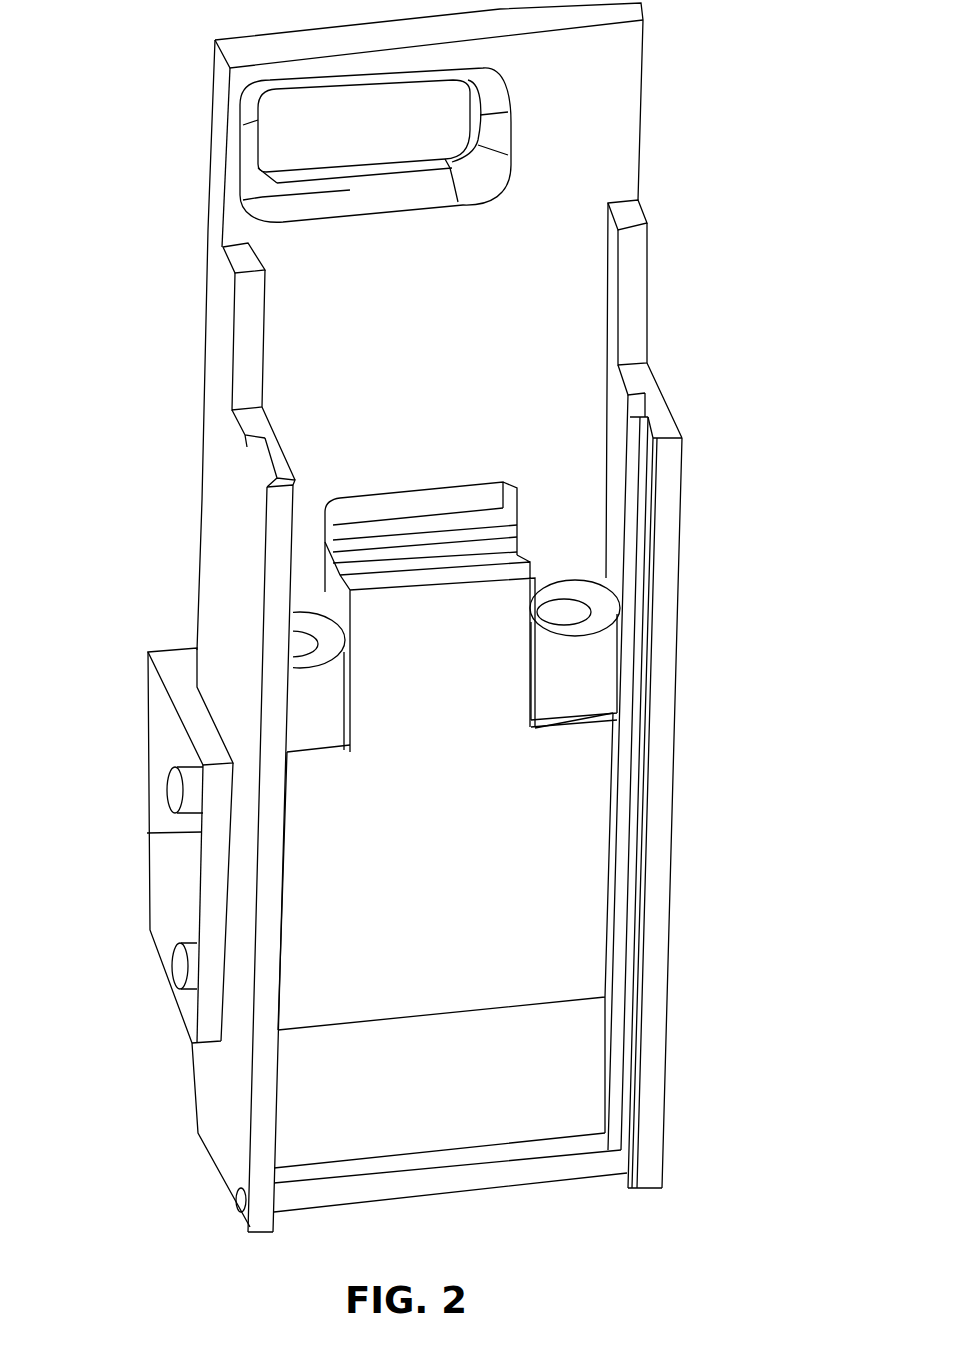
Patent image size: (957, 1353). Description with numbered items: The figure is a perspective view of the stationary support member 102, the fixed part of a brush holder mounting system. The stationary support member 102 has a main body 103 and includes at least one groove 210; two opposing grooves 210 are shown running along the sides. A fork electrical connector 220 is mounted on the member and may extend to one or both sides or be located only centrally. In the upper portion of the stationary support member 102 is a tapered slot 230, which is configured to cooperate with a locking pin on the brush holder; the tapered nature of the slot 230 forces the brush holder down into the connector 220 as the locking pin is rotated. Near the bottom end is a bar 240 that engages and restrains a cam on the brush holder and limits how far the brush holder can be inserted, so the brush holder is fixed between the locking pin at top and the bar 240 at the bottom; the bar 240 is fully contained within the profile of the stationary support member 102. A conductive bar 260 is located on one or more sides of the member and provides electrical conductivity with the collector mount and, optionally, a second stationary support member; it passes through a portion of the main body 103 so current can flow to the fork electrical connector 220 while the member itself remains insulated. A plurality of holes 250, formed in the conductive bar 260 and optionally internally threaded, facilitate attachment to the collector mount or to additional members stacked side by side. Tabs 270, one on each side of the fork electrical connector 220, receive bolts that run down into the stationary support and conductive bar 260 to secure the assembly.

The stationary support member 102 is at (681, 90).
The main body 103 is at (490, 382).
The groove 210 is at (232, 430).
The fork electrical connector 220 is at (417, 643).
The tapered slot 230 is at (285, 207).
The bar 240 is at (560, 1168).
The holes 250 is at (165, 797).
The conductive bar 260 is at (414, 893).
The tab 270 is at (310, 723).